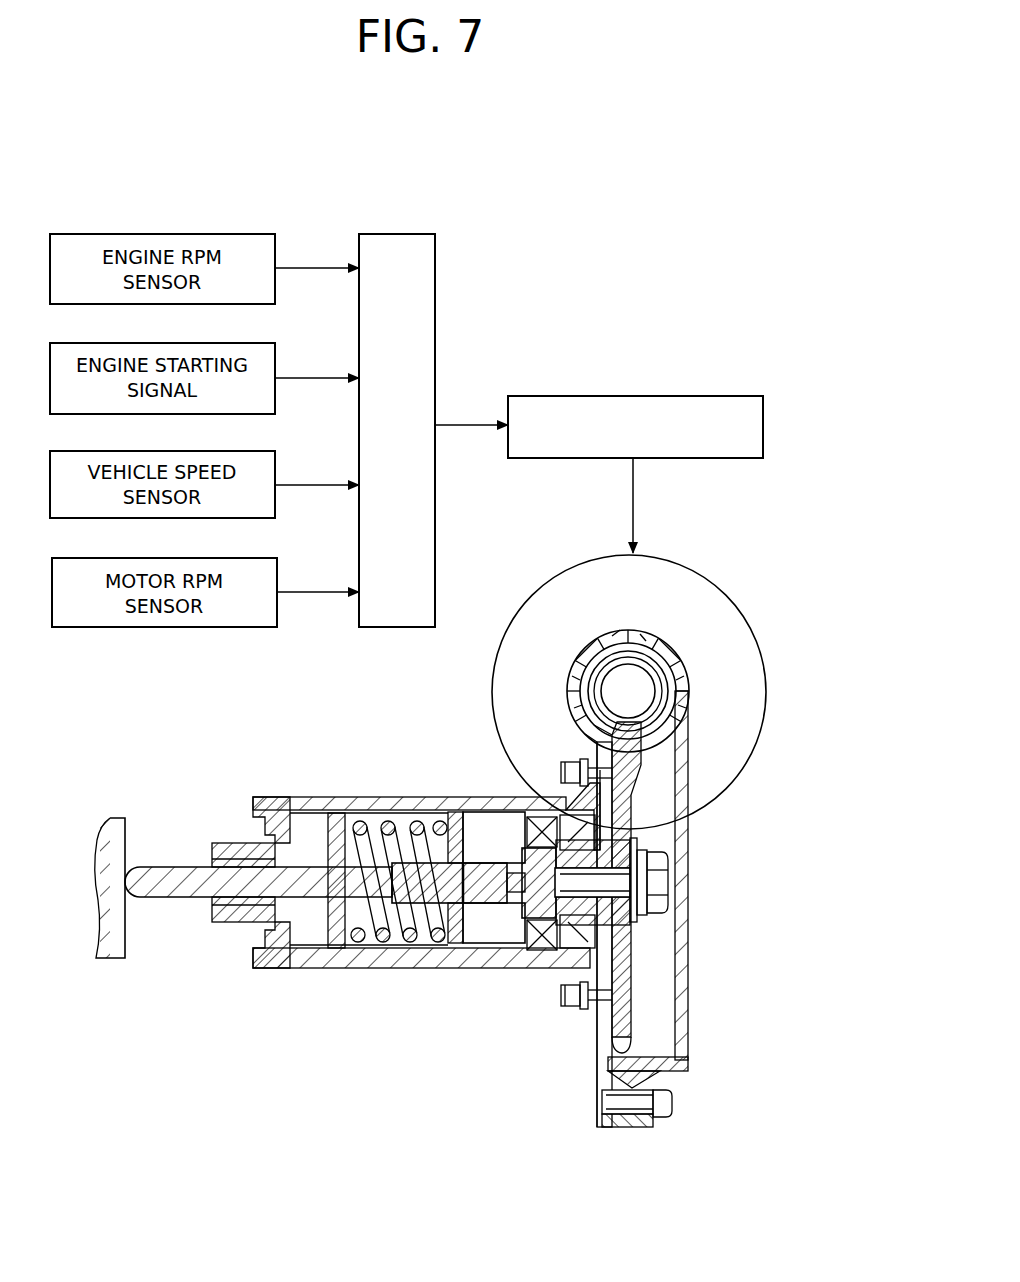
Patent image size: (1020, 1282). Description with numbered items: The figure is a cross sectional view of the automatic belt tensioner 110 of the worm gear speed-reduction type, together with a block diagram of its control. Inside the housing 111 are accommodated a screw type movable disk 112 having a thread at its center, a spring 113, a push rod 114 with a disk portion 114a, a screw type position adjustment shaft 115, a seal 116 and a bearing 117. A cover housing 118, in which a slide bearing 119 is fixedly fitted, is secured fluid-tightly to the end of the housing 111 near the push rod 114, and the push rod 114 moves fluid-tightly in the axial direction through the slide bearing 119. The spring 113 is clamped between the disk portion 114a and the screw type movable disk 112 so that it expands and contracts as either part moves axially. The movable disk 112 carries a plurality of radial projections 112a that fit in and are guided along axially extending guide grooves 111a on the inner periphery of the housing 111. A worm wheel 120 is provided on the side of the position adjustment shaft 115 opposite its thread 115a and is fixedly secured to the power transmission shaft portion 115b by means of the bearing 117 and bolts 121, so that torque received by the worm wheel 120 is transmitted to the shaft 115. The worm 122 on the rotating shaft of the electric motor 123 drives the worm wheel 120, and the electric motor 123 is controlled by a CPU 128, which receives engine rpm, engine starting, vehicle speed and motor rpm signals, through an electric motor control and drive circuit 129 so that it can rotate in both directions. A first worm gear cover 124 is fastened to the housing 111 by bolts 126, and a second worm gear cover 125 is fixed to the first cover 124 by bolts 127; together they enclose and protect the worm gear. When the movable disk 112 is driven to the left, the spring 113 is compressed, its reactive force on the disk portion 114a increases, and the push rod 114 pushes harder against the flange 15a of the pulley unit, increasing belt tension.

The flange 15a is at (92, 830).
The automatic belt tensioner 110 is at (305, 795).
The housing 111 is at (390, 797).
The guide grooves 111a is at (360, 797).
The screw type movable disk 112 is at (455, 968).
The radial projections 112a is at (452, 797).
The spring 113 is at (385, 968).
The push rod 114 is at (162, 867).
The disk portion 114a is at (343, 962).
The screw type position adjustment shaft 115 is at (515, 945).
The thread 115a is at (487, 960).
The power transmission shaft portion 115b is at (597, 1035).
The seal 116 is at (556, 960).
The bearing 117 is at (535, 797).
The cover housing 118 is at (232, 843).
The slide bearing 119 is at (232, 922).
The worm wheel 120 is at (595, 1070).
The bolts 121 is at (662, 880).
The worm 122 is at (662, 686).
The electric motor 123 is at (697, 571).
The first worm gear cover 124 is at (583, 1085).
The second worm gear cover 125 is at (680, 1064).
The bolts 126 is at (557, 767).
The bolts 127 is at (672, 1105).
The CPU 128 is at (397, 234).
The electric motor control and drive circuit 129 is at (633, 396).